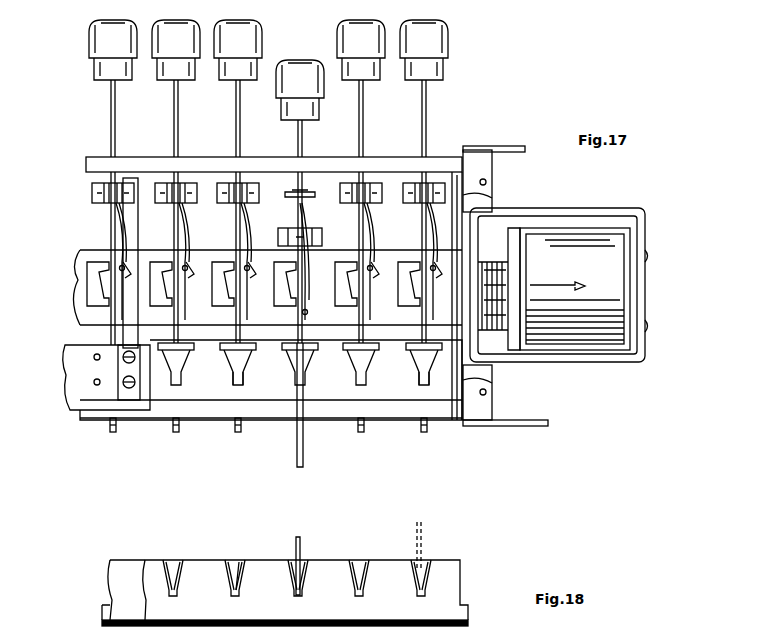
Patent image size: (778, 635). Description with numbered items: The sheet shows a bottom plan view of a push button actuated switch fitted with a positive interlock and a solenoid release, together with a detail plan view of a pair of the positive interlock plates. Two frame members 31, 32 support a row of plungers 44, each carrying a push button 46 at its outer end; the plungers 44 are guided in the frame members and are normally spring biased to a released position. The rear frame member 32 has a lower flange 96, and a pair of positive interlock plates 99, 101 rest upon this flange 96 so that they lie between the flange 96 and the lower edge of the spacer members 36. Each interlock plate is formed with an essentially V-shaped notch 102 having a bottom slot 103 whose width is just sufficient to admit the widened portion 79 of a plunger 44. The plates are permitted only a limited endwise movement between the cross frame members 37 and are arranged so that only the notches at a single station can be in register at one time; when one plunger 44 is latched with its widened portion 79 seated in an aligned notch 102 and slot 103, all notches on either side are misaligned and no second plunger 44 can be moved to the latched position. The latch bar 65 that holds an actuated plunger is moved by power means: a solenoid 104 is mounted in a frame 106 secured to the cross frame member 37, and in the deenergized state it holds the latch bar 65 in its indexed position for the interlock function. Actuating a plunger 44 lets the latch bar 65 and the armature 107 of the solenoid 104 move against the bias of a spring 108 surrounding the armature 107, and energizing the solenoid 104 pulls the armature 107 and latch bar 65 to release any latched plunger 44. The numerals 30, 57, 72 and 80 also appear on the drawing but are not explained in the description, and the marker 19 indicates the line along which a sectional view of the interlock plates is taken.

In FIG. 17, the record changer mechanism 30 is at (530, 80).
In FIG. 17, the frame member 31 is at (340, 157).
In FIG. 17, the rear frame member 32 is at (262, 418).
In FIG. 17, the spacer members 36 is at (455, 222).
In FIG. 17, the cross frame member 37 is at (464, 232).
In FIG. 17, the plunger 44 is at (180, 128).
In FIG. 18, the plunger 44 is at (428, 545).
In FIG. 17, the push button 46 is at (90, 42).
In FIG. 17, the slide plate 57 is at (130, 400).
In FIG. 17, the latch bar 65 is at (374, 265).
In FIG. 17, the lever 72 is at (244, 272).
In FIG. 17, the widened portion of the plunger 79 is at (304, 344).
In FIG. 18, the widened portion of the plunger 79 is at (302, 550).
In FIG. 17, the central lever 80 is at (348, 278).
In FIG. 17, the lower flange 96 is at (340, 415).
In FIG. 18, the lower flange 96 is at (468, 608).
In FIG. 17, the positive interlock plate 99 is at (428, 360).
In FIG. 17, the positive interlock plate 101 is at (312, 395).
In FIG. 17, the V-shaped notch 102 is at (232, 350).
In FIG. 18, the V-shaped notch 102 is at (230, 560).
In FIG. 17, the bottom slot 103 is at (233, 380).
In FIG. 18, the bottom slot 103 is at (240, 570).
In FIG. 17, the solenoid 104 is at (625, 262).
In FIG. 17, the frame 106 is at (606, 210).
In FIG. 17, the armature 107 is at (498, 262).
In FIG. 17, the spring 108 is at (496, 308).
In FIG. 18, the section line 19 is at (56, 516).